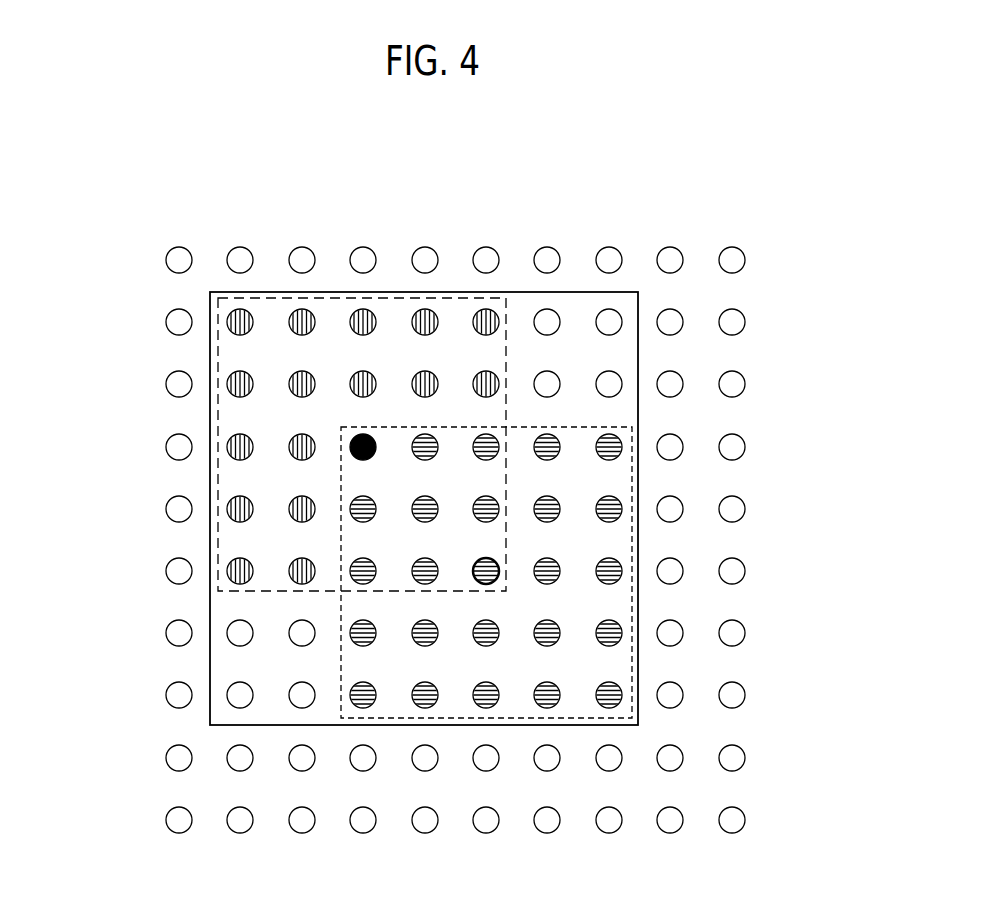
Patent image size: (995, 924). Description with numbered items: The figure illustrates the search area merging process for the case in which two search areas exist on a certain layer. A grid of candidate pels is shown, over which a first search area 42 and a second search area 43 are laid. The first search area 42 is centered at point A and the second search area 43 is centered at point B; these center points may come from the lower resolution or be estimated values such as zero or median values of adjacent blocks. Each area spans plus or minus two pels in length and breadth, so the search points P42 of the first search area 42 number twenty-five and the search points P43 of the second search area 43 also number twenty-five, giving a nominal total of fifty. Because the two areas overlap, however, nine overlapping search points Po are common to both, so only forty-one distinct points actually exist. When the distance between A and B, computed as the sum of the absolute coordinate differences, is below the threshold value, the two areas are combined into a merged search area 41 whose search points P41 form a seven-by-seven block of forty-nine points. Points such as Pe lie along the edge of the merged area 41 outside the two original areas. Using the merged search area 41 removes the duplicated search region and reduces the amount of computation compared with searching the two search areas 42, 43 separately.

The merged search area 41 is at (398, 292).
The first search area 42 is at (322, 298).
The second search area 43 is at (634, 485).
The search points of the merged search area P41 is at (614, 320).
The search points of the first search area P42 is at (234, 316).
The search points of the second search area P43 is at (616, 706).
The overlapping search points Po is at (356, 579).
The edge pixel Pe is at (238, 697).
The center point of the first search area A is at (354, 432).
The center point of the second search area B is at (478, 561).